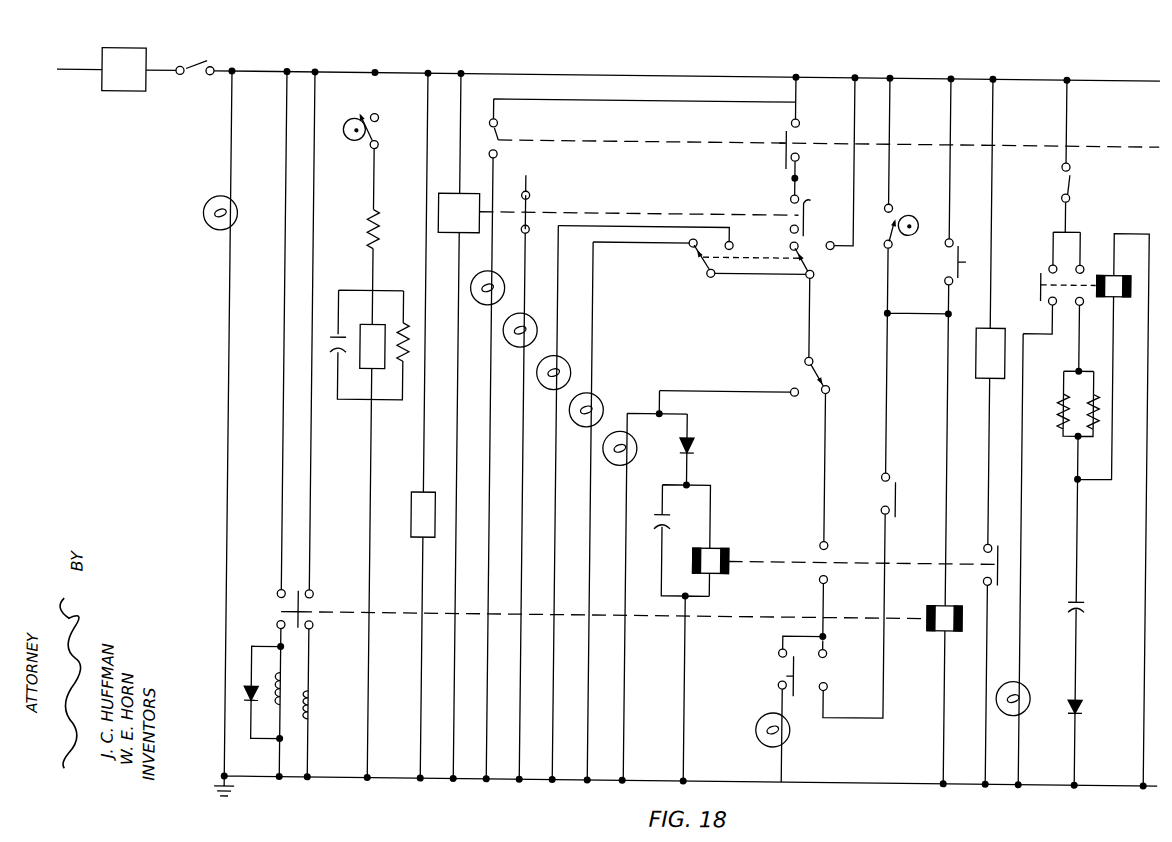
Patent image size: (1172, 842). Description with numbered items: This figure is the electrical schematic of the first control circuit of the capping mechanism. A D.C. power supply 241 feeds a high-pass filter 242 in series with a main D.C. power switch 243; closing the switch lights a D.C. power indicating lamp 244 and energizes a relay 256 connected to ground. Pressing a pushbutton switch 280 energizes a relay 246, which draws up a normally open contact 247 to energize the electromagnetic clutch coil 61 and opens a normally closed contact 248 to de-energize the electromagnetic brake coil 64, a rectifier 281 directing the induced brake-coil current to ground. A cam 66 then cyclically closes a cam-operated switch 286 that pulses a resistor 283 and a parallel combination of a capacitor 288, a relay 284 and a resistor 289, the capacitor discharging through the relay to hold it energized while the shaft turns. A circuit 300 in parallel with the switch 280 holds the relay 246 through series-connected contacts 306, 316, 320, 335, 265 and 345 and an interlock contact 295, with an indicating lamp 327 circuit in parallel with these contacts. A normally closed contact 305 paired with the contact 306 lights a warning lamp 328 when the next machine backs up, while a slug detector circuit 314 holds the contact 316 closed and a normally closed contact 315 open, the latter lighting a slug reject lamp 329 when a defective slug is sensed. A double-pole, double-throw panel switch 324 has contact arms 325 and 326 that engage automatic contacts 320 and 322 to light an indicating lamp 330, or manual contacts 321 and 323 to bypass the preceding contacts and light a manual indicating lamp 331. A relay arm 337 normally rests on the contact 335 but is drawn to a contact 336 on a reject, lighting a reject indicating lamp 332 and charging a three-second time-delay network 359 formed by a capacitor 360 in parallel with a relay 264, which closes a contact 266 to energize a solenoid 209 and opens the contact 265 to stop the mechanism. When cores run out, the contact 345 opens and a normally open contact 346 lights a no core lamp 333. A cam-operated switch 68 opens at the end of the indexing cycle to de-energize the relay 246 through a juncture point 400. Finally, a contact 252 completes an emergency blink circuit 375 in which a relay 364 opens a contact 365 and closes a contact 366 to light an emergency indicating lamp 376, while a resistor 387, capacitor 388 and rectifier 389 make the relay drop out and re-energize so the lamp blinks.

The D.C. power supply 241 is at (68, 73).
The high-pass filter 242 is at (122, 92).
The D.C. power switch 243 is at (196, 62).
The D.C. power indicating lamp 244 is at (222, 230).
The relay 246 is at (215, 362).
The normally open contact 247 is at (318, 596).
The normally closed contact 248 is at (282, 594).
The contact 252 is at (1070, 178).
The relay 256 is at (414, 532).
The relay 264 is at (722, 543).
The contact 265 is at (822, 566).
The contact 266 is at (999, 575).
The pushbutton switch 280 is at (962, 228).
The rectifier 281 is at (254, 686).
The resistor 283 is at (378, 247).
The relay 284 is at (362, 352).
The switch 286 is at (380, 143).
The capacitor 288 is at (336, 330).
The resistor 289 is at (405, 360).
The normally open contact 295 is at (900, 480).
The circuit 300 is at (667, 93).
The normally closed contact 305 is at (500, 130).
The normally open contact 306 is at (800, 122).
The slug detector circuit 314 is at (470, 230).
The normally closed contact 315 is at (530, 204).
The normally open contact 316 is at (806, 190).
The contact 320 is at (800, 240).
The contact 321 is at (832, 243).
The contact 322 is at (690, 248).
The contact 323 is at (735, 243).
The double-pole, double-throw panel switch 324 is at (736, 256).
The contact arm 325 is at (814, 272).
The contact arm 326 is at (712, 276).
The indicating lamp 327 is at (582, 383).
The warning lamp 328 is at (483, 302).
The slug reject lamp 329 is at (514, 344).
The indicating lamp 330 is at (548, 386).
The manual indicating lamp 331 is at (581, 423).
The reject indicating lamp 332 is at (614, 461).
The no core lamp 333 is at (765, 738).
The contact 335 is at (833, 382).
The contact 336 is at (794, 384).
The relay arm 337 is at (816, 356).
The normally closed contact 345 is at (834, 676).
The normally open contact 346 is at (785, 656).
The time-delay network 359 is at (697, 440).
The capacitor 360 is at (667, 512).
The relay 364 is at (1122, 266).
The contact 365 is at (1084, 298).
The contact 366 is at (1040, 276).
The emergency indicating circuit 375 is at (1100, 357).
The emergency indicating lamp 376 is at (1026, 676).
The resistor 387 is at (1074, 420).
The capacitor 388 is at (1084, 592).
The rectifier 389 is at (1090, 700).
The juncture point 400 is at (890, 314).
The solenoid 209 is at (983, 372).
The electromagnetic clutch coil 61 is at (319, 696).
The electromagnetic brake coil 64 is at (290, 690).
The cam 66 is at (348, 138).
The cam-operated switch 68 is at (895, 242).